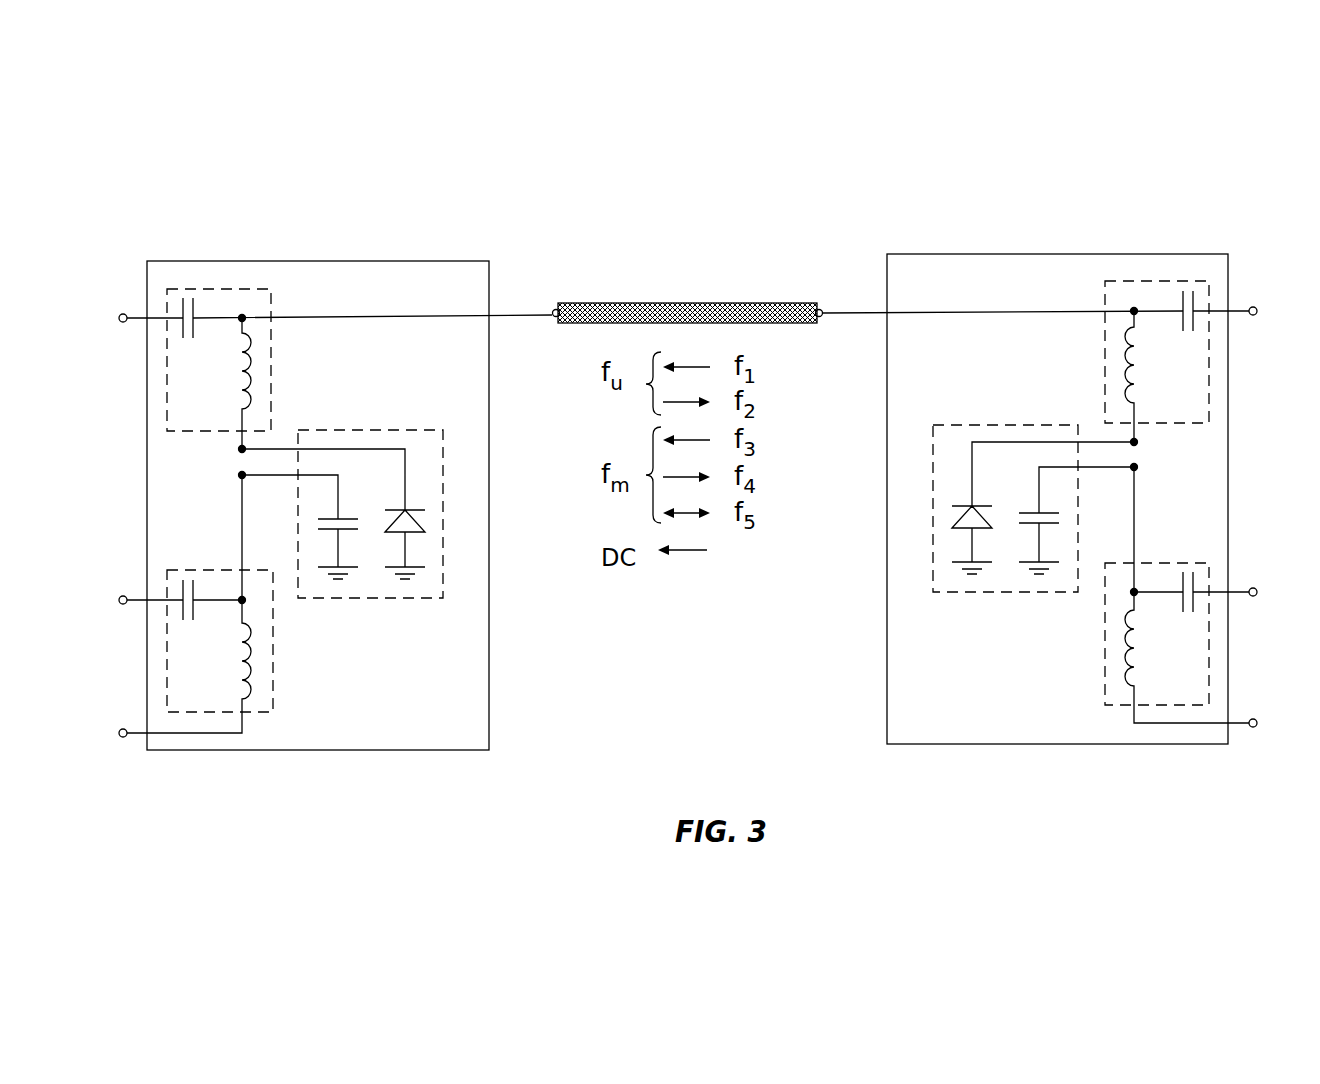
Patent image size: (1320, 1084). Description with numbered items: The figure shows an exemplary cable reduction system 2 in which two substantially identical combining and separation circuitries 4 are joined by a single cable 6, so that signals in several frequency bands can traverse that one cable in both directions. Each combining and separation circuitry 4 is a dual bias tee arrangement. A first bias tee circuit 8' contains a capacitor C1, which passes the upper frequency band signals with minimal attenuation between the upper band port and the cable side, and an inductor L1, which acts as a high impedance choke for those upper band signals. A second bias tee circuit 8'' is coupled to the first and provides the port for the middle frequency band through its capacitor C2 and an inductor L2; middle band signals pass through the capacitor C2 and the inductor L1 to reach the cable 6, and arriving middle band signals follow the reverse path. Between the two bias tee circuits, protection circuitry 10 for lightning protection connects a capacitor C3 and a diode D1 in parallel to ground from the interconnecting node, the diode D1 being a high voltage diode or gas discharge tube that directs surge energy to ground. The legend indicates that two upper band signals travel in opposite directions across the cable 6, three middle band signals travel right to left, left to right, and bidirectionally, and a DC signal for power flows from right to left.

The cable reduction system 2 is at (977, 163).
The combining and separation circuitry 4 is at (432, 261).
The cable 6 is at (740, 302).
The first bias tee circuit 8' is at (688, 350).
The second bias tee circuit 8'' is at (688, 642).
The protection circuitry 10 is at (390, 430).
The capacitor C1 is at (197, 328).
The capacitor C2 is at (197, 612).
The capacitor C3 is at (343, 517).
The inductor L1 is at (255, 351).
The inductor L2 is at (256, 643).
The diode D1 is at (418, 516).